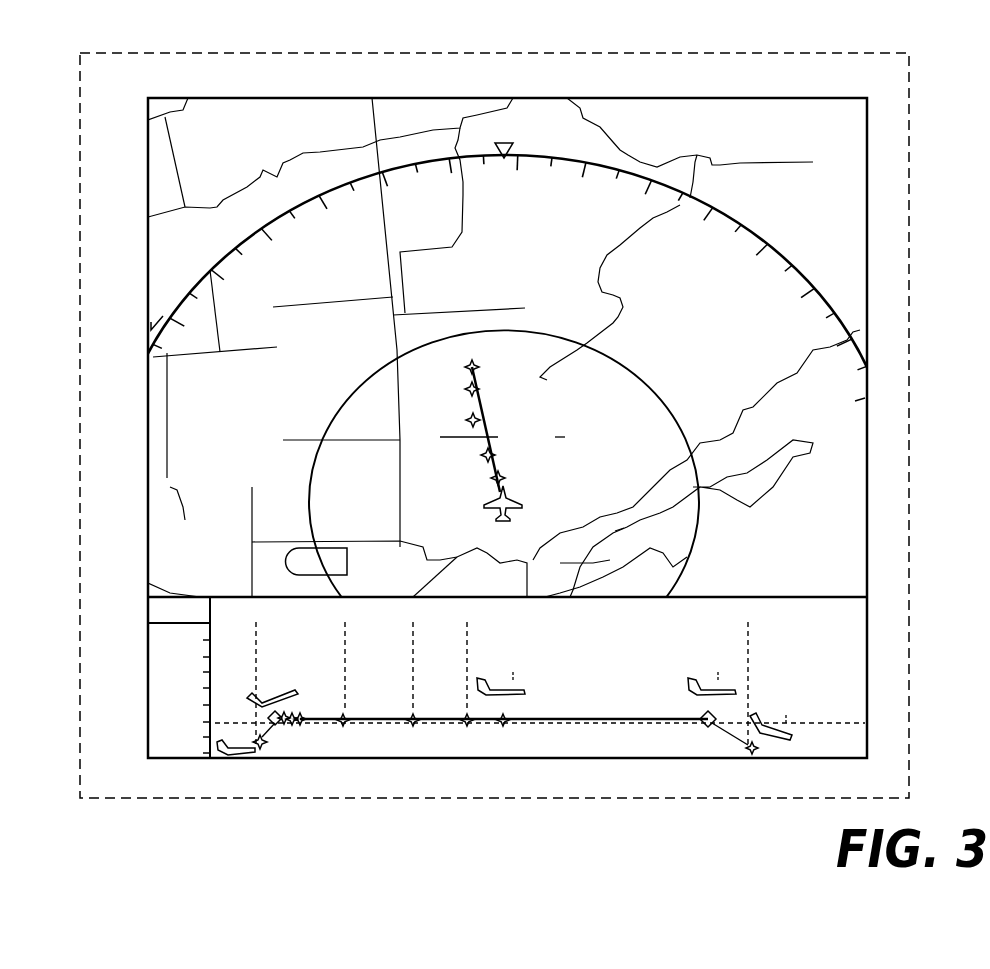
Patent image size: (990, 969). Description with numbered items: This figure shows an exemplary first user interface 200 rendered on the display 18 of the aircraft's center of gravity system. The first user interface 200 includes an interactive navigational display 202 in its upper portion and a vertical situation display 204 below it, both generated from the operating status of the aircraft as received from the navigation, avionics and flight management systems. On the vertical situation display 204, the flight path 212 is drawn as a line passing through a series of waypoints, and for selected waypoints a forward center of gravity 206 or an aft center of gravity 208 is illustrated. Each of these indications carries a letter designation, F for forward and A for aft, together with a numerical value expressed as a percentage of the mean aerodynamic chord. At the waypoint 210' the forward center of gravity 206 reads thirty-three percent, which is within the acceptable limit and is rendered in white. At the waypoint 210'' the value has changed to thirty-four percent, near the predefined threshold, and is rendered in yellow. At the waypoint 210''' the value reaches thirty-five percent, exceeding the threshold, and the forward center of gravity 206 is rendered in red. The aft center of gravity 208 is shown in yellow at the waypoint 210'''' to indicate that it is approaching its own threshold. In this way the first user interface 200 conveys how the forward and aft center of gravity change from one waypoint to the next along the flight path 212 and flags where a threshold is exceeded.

The display 18 is at (912, 276).
The first user interface 200 is at (787, 82).
The interactive navigational display 202 is at (897, 436).
The vertical situation display 204 is at (569, 715).
The forward center of gravity 206 is at (536, 676).
The aft center of gravity 208 is at (270, 661).
The waypoint 210' is at (495, 755).
The waypoint 210'' is at (709, 754).
The waypoint 210''' is at (766, 786).
The waypoint 210'''' is at (268, 772).
The flight path 212 is at (548, 723).